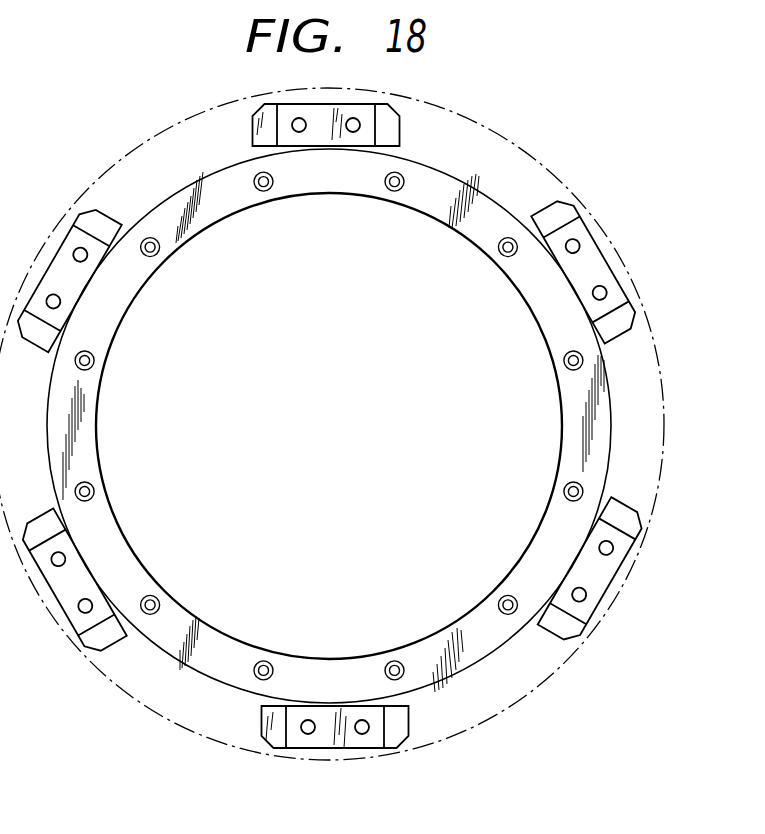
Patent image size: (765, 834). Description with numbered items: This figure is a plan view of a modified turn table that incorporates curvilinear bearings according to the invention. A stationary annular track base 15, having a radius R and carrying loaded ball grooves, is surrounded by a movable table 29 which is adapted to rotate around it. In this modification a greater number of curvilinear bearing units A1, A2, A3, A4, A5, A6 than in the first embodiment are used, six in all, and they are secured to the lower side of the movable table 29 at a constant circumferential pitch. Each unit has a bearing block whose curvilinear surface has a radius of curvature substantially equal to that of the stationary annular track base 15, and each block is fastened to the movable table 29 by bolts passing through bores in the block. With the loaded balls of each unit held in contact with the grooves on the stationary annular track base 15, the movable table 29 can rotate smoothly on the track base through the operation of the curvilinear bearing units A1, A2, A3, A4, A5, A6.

The curvilinear bearing unit A1 is at (80, 622).
The curvilinear bearing unit A2 is at (28, 348).
The curvilinear bearing unit A3 is at (254, 120).
The curvilinear bearing unit A4 is at (550, 202).
The curvilinear bearing unit A5 is at (615, 505).
The curvilinear bearing unit A6 is at (408, 718).
The stationary annular track base 15 is at (588, 398).
The movable table 29 is at (140, 703).